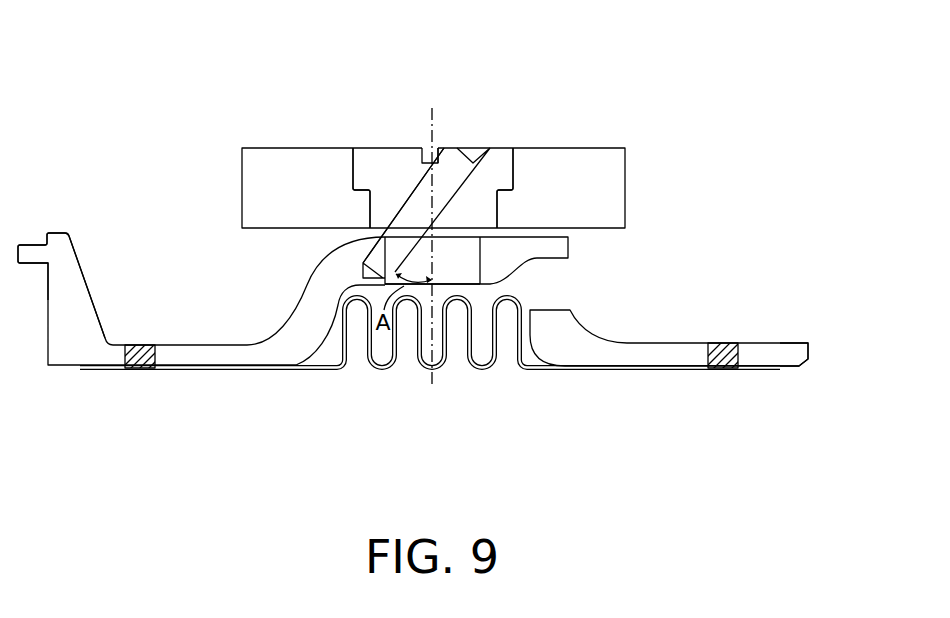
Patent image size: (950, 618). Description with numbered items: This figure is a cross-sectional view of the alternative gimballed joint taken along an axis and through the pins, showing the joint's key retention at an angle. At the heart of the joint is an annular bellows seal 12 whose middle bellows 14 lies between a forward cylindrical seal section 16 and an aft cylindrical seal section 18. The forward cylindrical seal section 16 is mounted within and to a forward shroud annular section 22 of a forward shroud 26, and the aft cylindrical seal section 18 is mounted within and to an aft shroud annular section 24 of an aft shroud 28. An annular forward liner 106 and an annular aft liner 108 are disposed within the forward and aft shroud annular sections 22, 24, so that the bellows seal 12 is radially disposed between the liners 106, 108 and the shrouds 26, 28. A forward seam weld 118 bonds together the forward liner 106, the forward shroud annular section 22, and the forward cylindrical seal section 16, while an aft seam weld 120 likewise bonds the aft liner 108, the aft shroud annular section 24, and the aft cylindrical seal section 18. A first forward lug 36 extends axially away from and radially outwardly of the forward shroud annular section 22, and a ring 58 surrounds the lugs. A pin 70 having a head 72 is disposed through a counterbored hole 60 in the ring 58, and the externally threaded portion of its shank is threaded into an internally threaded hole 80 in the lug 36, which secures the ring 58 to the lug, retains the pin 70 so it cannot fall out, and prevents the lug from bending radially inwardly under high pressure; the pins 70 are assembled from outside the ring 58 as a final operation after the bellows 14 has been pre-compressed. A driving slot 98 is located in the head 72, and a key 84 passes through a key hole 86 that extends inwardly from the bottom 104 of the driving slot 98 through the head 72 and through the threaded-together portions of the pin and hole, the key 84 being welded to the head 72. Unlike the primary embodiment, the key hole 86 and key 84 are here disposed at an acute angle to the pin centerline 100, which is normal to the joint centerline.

The annular bellows seal 12 is at (428, 367).
The bellows 14 is at (360, 371).
The forward cylindrical seal section 16 is at (82, 370).
The aft cylindrical seal section 18 is at (783, 368).
The forward shroud annular section 22 is at (201, 301).
The aft shroud annular section 24 is at (706, 326).
The forward shroud 26 is at (87, 262).
The aft shroud 28 is at (810, 348).
The first forward lug 36 is at (512, 260).
The ring 58 is at (433, 156).
The counterbored holes 60 is at (345, 150).
The pins 70 is at (373, 149).
The heads 72 is at (506, 149).
The internally threaded holes 80 is at (478, 281).
The key 84 is at (415, 218).
The key hole 86 is at (440, 189).
The driving slot 98 is at (422, 148).
The pin centerline 100 is at (432, 372).
The bottoms of the driving slots 104 is at (438, 148).
The forward liner 106 is at (200, 370).
The aft liner 108 is at (630, 371).
The forward seam weld 118 is at (140, 345).
The aft seam weld 120 is at (723, 343).